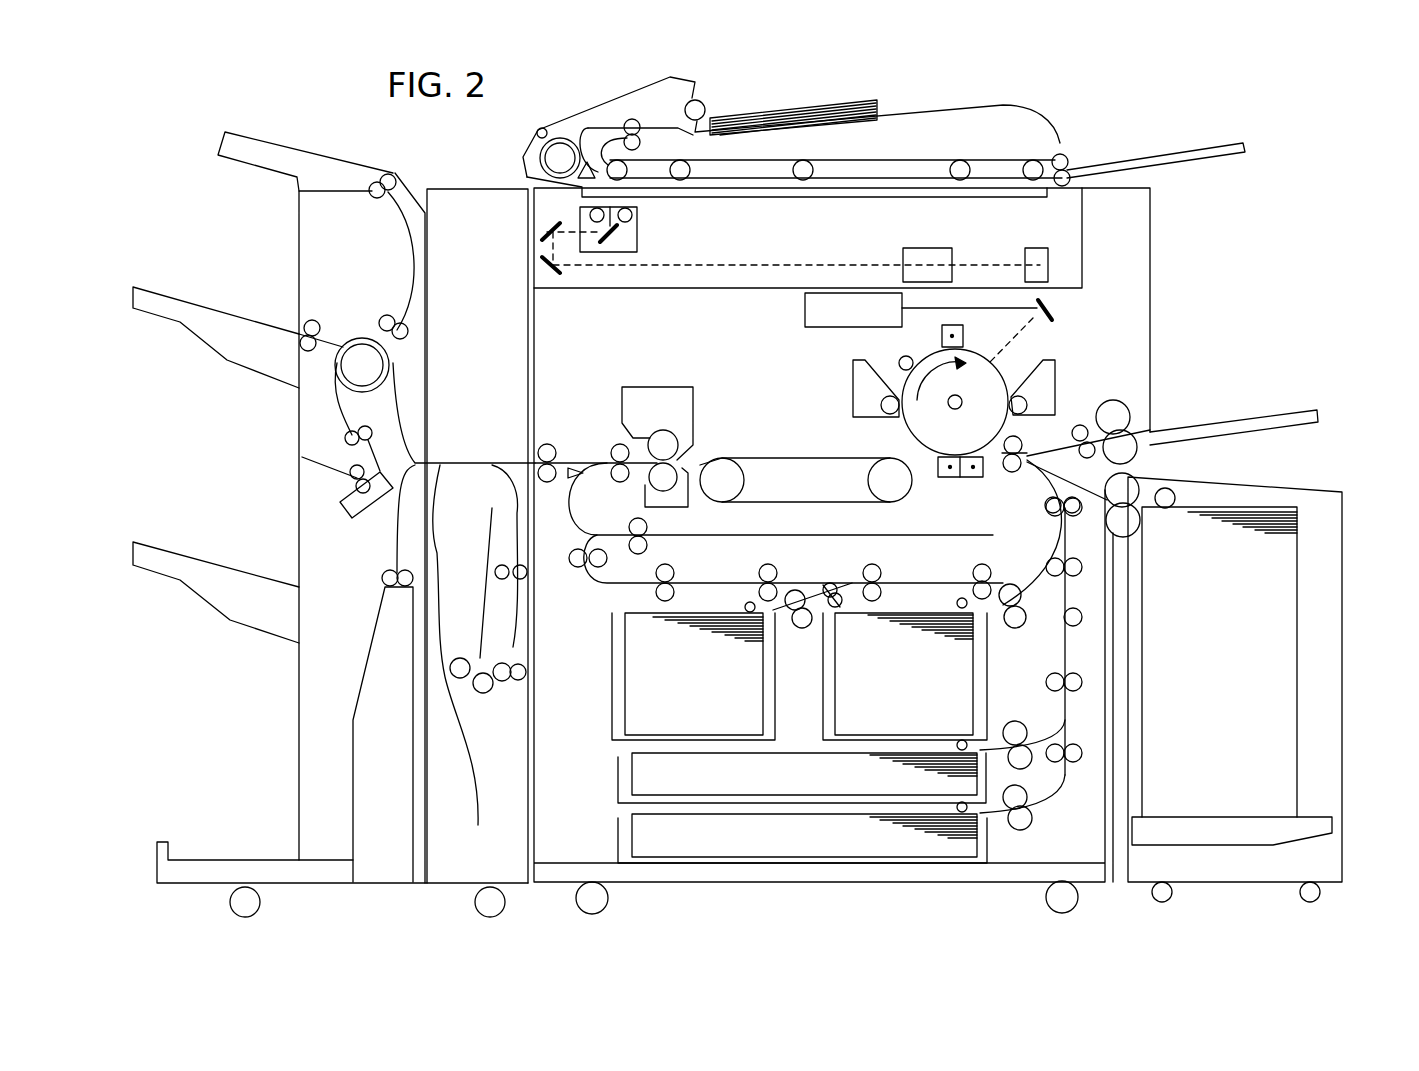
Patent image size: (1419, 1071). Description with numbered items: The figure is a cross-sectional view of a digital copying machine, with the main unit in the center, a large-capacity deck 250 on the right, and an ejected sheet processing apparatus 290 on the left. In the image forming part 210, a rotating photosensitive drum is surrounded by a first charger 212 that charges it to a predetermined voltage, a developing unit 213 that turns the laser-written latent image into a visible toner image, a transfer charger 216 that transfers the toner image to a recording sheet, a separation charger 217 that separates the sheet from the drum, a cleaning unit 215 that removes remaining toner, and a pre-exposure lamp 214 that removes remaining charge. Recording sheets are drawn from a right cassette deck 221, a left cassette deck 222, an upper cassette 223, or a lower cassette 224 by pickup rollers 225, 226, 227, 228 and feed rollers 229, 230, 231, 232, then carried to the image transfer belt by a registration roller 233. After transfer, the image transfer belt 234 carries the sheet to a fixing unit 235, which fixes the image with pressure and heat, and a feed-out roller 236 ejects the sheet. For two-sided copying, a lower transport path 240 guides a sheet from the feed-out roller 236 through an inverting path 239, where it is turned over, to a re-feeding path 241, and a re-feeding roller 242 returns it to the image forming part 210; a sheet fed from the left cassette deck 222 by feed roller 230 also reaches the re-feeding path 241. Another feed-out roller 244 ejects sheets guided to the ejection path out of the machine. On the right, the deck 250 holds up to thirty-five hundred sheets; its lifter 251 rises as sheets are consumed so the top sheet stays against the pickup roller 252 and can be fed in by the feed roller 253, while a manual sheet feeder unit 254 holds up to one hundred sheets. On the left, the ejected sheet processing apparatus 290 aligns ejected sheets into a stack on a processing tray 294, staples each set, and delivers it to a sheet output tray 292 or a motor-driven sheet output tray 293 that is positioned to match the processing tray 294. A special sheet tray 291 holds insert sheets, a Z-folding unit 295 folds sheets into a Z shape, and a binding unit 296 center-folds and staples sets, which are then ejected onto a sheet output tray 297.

The image forming part 210 is at (1008, 423).
The first charger 212 is at (955, 323).
The developing unit 213 is at (1057, 373).
The pre-exposure lamp 214 is at (902, 358).
The cleaning unit 215 is at (858, 380).
The transfer charger 216 is at (973, 478).
The separation charger 217 is at (930, 457).
The right cassette deck 221 is at (987, 697).
The left cassette deck 222 is at (623, 688).
The upper cassette 223 is at (633, 770).
The lower cassette 224 is at (633, 837).
The pickup roller 225 is at (957, 603).
The pickup roller 226 is at (743, 605).
The pickup roller 227 is at (957, 742).
The pickup roller 228 is at (957, 805).
The feed roller 229 is at (1022, 628).
The feed roller 230 is at (800, 628).
The feed roller 231 is at (1027, 768).
The feed roller 232 is at (1028, 828).
The registration roller 233 is at (1010, 473).
The image transfer belt 234 is at (763, 458).
The fixing unit 235 is at (678, 387).
The feed-out roller 236 is at (615, 448).
The inverting path 239 is at (787, 535).
The lower transport path 240 is at (793, 580).
The re-feeding path 241 is at (897, 580).
The re-feeding roller 242 is at (992, 563).
The feed-out roller 244 is at (537, 452).
The deck 250 is at (1345, 588).
The lifter 251 is at (1332, 823).
The pickup roller 252 is at (1168, 508).
The feed roller 253 is at (1143, 530).
The manual sheet feeder unit 254 is at (1287, 410).
The ejected sheet processing apparatus 290 is at (299, 205).
The special sheet tray 291 is at (247, 148).
The sheet output tray 292 is at (220, 310).
The sheet output tray 293 is at (220, 565).
The processing tray 294 is at (357, 512).
The Z-folding unit 295 is at (452, 858).
The binding unit 296 is at (363, 683).
The sheet output tray 297 is at (218, 860).